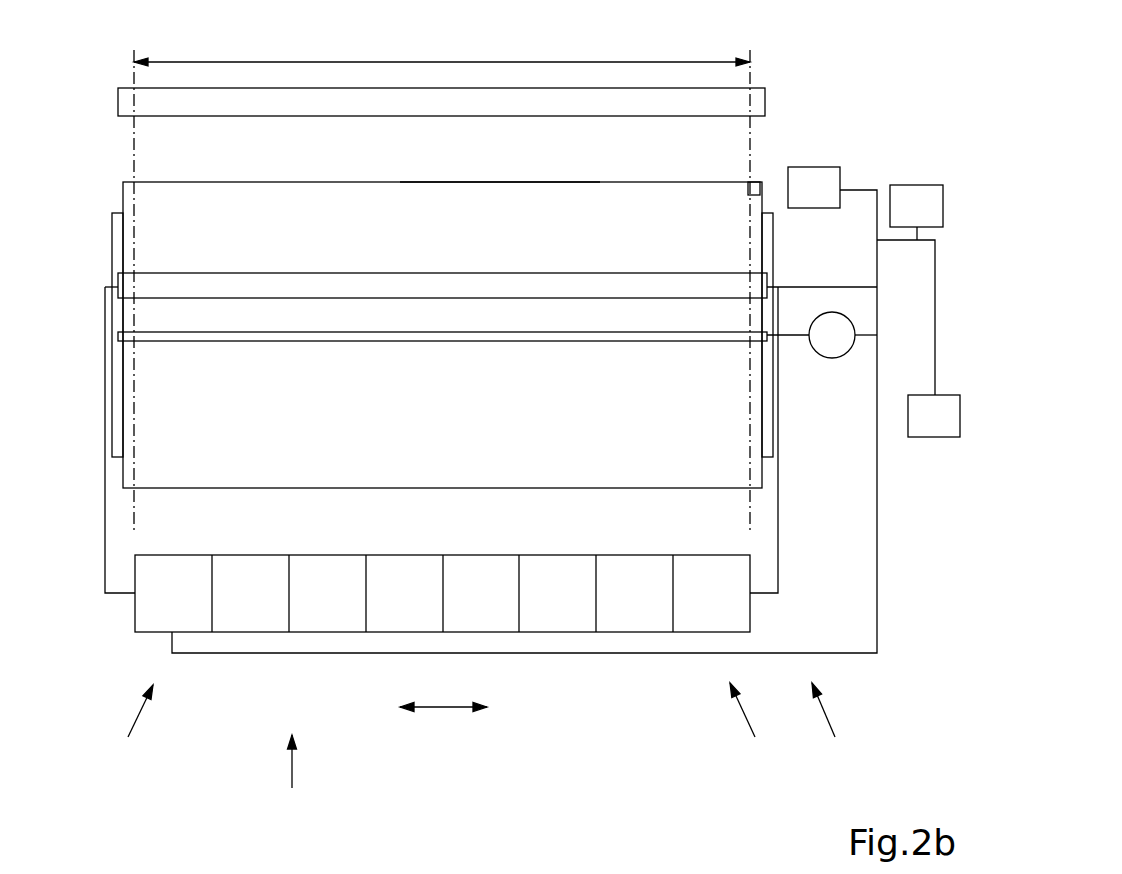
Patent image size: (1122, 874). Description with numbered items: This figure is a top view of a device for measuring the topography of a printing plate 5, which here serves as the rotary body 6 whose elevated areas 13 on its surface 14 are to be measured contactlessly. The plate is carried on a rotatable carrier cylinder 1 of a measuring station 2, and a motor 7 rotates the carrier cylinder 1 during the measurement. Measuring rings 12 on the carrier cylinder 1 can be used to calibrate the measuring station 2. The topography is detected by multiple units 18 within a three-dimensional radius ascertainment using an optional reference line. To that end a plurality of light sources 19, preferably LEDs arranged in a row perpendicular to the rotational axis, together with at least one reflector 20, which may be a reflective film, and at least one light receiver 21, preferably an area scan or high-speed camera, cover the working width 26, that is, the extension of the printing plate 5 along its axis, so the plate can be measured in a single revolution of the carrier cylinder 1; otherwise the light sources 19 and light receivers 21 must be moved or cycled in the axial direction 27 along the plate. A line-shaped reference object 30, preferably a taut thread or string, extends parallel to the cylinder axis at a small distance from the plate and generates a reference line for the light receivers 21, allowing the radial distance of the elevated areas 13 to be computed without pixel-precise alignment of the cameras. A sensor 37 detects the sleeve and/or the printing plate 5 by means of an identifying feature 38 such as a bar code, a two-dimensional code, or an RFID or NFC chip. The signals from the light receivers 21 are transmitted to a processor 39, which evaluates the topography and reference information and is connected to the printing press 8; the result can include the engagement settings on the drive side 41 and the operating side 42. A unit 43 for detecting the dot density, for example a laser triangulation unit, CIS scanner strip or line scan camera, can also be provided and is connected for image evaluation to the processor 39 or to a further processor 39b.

The carrier cylinder 1 is at (118, 248).
The measuring station 2 is at (750, 726).
The printing plate 5 is at (442, 314).
The rotary body 6 is at (275, 202).
The motor 7 is at (830, 353).
The printing press 8 is at (930, 422).
The measuring rings 12 is at (767, 397).
The elevated areas 13 is at (500, 165).
The surface 14 is at (484, 192).
The units 18 is at (293, 782).
The light sources 19 is at (442, 648).
The reflector 20 is at (750, 102).
The light receiver 21 is at (492, 613).
The working width 26 is at (417, 62).
The axial direction 27 is at (443, 707).
The reference object 30 is at (187, 335).
The sensor 37 is at (822, 173).
The identifying feature 38 is at (753, 187).
The processor 39 is at (909, 260).
The further processor 39b is at (918, 200).
The drive side 41 is at (491, 479).
The operating side 42 is at (132, 733).
The unit for detecting the dot density 43 is at (187, 280).